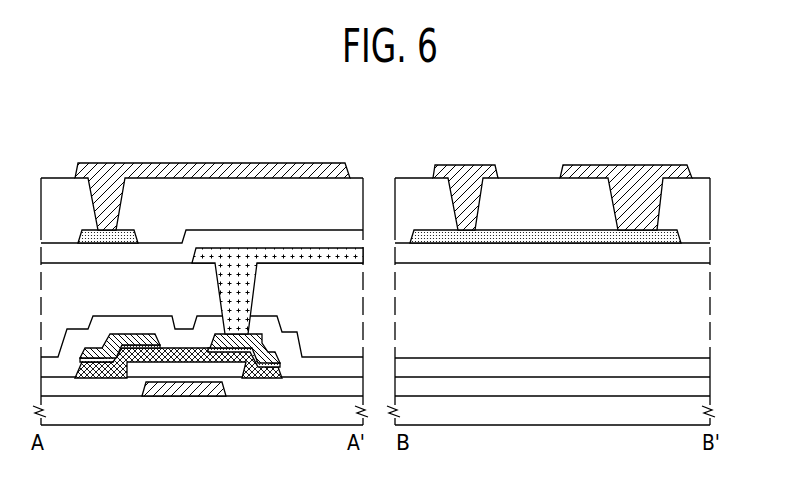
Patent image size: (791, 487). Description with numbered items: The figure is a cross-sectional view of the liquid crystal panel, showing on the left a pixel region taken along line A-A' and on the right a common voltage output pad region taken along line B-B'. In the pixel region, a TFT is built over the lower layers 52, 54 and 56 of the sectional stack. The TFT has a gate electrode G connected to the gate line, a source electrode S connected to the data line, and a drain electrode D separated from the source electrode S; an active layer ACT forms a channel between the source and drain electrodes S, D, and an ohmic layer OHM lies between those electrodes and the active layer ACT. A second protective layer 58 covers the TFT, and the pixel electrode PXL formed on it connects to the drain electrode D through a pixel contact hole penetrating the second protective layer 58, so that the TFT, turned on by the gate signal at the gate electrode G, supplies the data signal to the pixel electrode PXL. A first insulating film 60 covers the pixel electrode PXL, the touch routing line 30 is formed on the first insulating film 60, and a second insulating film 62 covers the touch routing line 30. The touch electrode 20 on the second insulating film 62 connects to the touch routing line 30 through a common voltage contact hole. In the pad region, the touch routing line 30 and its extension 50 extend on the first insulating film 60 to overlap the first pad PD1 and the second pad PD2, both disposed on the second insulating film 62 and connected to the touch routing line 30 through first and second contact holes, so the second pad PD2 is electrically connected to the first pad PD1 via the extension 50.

The touch electrode 20 is at (103, 195).
The touch routing line 30 is at (123, 230).
The extension 50 is at (533, 237).
The substrate 52 is at (700, 405).
The buffer layer 54 is at (700, 385).
The gate insulating layer 56 is at (700, 367).
The second protective layer 58 is at (700, 317).
The first insulating film 60 is at (252, 240).
The second insulating film 62 is at (700, 208).
The gate electrode G is at (177, 393).
The active layer ACT is at (247, 379).
The ohmic layer OHM is at (133, 368).
The source electrode S is at (100, 363).
The drain electrode D is at (270, 366).
The pixel electrode PXL is at (330, 264).
The first pad PD1 is at (465, 190).
The second pad PD2 is at (632, 192).